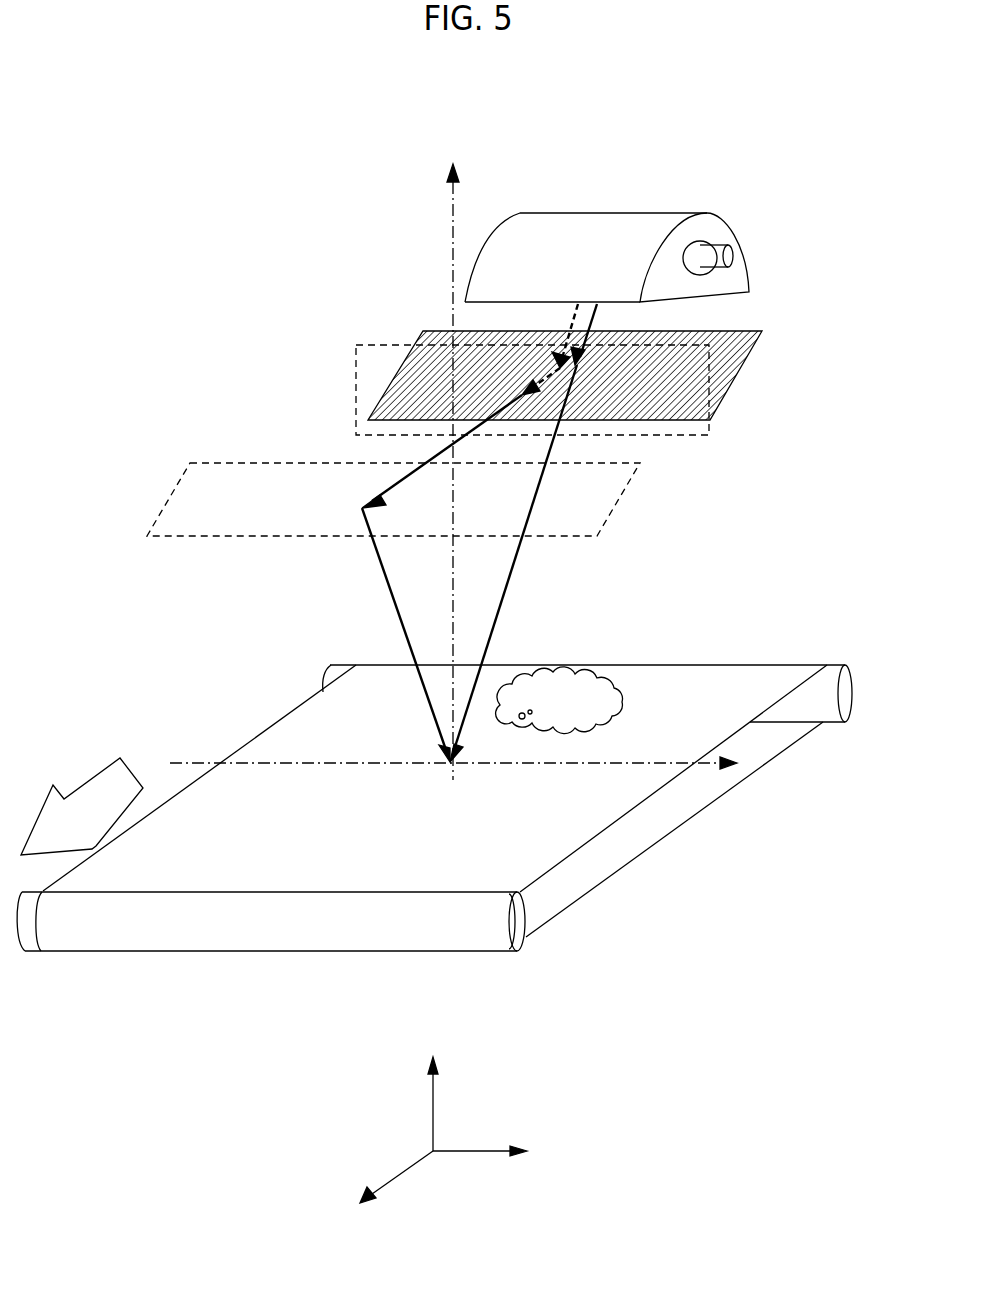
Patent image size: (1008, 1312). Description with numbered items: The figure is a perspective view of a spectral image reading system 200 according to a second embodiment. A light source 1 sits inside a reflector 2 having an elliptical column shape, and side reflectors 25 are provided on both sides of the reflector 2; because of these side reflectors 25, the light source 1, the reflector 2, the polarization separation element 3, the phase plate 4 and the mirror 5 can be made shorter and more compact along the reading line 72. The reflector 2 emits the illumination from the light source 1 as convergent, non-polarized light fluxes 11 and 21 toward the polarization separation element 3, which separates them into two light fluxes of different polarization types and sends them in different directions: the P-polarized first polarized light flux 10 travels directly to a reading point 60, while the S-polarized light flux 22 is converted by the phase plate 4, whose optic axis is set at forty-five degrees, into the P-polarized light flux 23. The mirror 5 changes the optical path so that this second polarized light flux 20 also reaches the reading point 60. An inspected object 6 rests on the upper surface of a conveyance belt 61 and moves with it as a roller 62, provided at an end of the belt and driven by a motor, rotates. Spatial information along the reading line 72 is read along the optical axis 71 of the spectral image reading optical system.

The spectral image reading system 200 is at (208, 192).
The optical axis 71 is at (456, 201).
The reflector 2 is at (659, 206).
The light source 1 is at (718, 248).
The side reflector 25 is at (738, 273).
The non-polarized light flux 21 is at (572, 322).
The S-polarized light flux 22 is at (540, 378).
The P-polarized light flux 23 is at (494, 410).
The polarization separation element 3 is at (412, 382).
The phase plate 4 is at (357, 410).
The mirror 5 is at (185, 487).
The non-polarized light flux 11 is at (594, 316).
The first polarized light flux 10 is at (505, 590).
The second polarized light flux 20 is at (398, 618).
The reading point 60 is at (445, 768).
The conveyance belt 61 is at (690, 815).
The roller 62 is at (845, 696).
The reading line 72 is at (183, 757).
The inspected object 6 is at (620, 685).